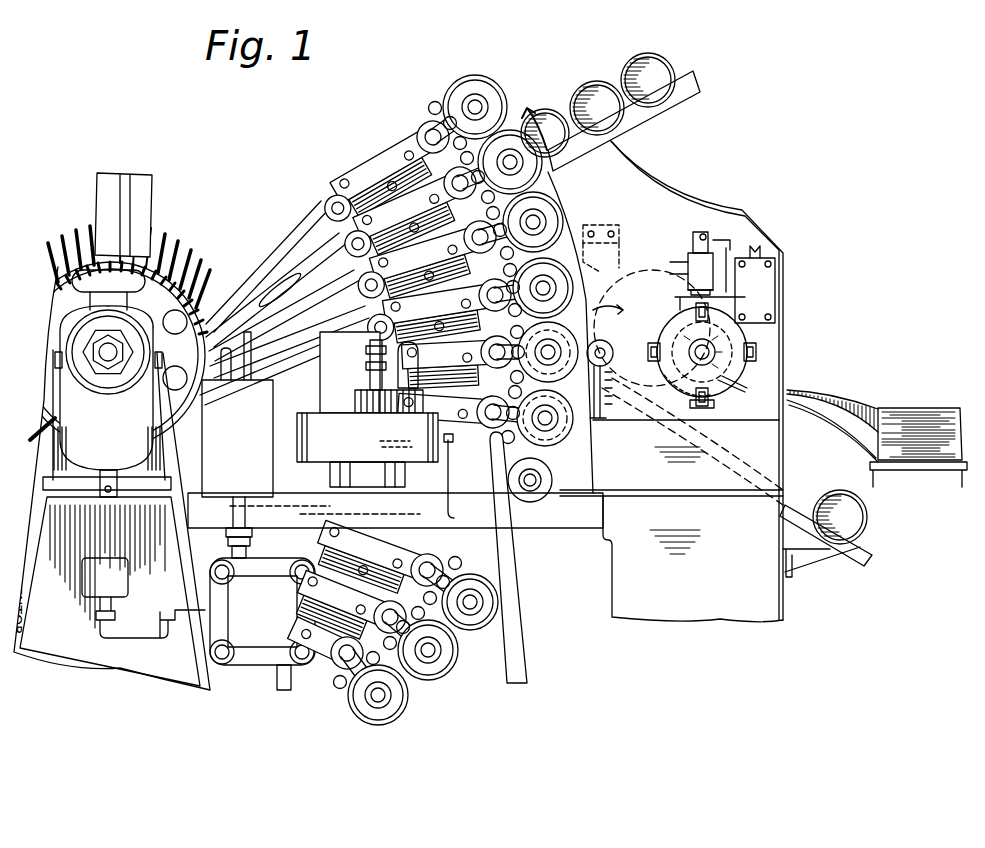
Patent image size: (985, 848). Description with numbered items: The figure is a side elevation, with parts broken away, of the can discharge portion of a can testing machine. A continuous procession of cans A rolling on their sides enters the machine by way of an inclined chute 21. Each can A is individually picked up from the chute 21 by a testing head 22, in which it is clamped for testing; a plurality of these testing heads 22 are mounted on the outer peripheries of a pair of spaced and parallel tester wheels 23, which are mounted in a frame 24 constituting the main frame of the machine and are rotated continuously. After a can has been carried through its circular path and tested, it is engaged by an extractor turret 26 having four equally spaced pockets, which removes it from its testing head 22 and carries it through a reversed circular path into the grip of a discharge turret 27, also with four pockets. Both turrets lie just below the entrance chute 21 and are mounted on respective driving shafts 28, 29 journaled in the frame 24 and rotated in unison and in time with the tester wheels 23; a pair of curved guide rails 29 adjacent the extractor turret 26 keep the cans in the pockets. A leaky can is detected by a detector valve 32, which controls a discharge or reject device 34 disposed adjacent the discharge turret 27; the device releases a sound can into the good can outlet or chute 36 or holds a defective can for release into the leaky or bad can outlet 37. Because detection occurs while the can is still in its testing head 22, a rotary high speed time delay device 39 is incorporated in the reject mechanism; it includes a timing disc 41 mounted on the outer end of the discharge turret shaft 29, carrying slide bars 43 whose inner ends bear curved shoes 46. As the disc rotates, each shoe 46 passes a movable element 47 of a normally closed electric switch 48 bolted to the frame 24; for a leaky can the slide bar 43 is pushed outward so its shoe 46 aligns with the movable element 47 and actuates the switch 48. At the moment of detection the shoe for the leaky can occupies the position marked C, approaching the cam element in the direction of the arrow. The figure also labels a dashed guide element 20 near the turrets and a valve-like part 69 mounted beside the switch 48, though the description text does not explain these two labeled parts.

The hopper guide 20 is at (628, 262).
The inclined chute 21 is at (668, 95).
The testing head 22 is at (497, 93).
The tester wheels 23 is at (357, 157).
The frame 24 is at (565, 493).
The extractor turret 26 is at (575, 323).
The discharge turret 27 is at (680, 372).
The driving shaft 28 is at (600, 353).
The discharge turret shaft 29 is at (703, 352).
The detector valve 32 is at (367, 409).
The discharge or reject device 34 is at (797, 303).
The good can outlet or chute 36 is at (860, 562).
The leaky or bad can outlet 37 is at (830, 398).
The rotary high speed time delay device 39 is at (728, 228).
The timing disc 41 is at (720, 396).
The slide bar 43 is at (722, 384).
The curved shoe 46 is at (690, 310).
The movable element 47 is at (732, 267).
The electric switch 48 is at (755, 284).
The valve 69 is at (692, 262).
The can A is at (625, 70).
The shoe position C is at (768, 348).